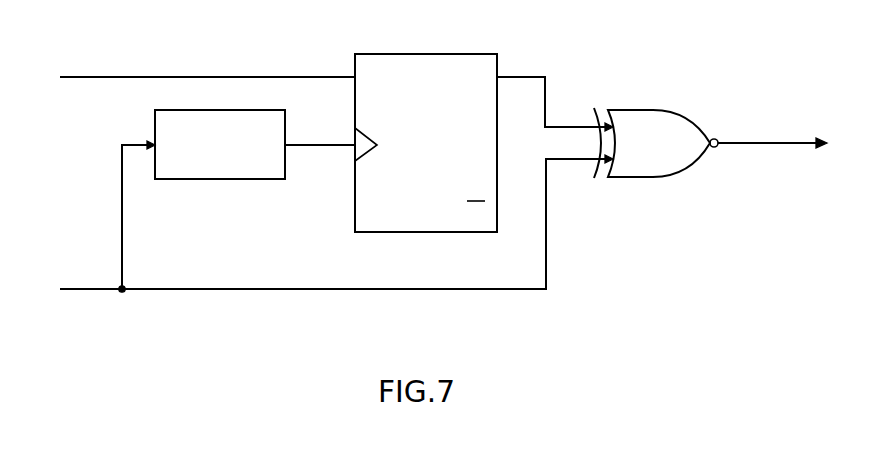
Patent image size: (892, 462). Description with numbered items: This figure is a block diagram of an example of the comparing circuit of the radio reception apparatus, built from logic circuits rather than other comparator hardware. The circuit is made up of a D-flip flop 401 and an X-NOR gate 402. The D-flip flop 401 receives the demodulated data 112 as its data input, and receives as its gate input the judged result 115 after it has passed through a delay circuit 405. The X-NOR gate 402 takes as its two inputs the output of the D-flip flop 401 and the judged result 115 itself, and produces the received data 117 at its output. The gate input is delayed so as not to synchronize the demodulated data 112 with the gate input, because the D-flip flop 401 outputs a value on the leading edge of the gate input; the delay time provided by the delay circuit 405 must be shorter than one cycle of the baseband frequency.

The demodulated data 112 is at (90, 77).
The judged result 115 is at (91, 289).
The received data 117 is at (745, 141).
The D-flip flop 401 is at (485, 40).
The X-NOR gate 402 is at (664, 93).
The delay circuit 405 is at (226, 180).